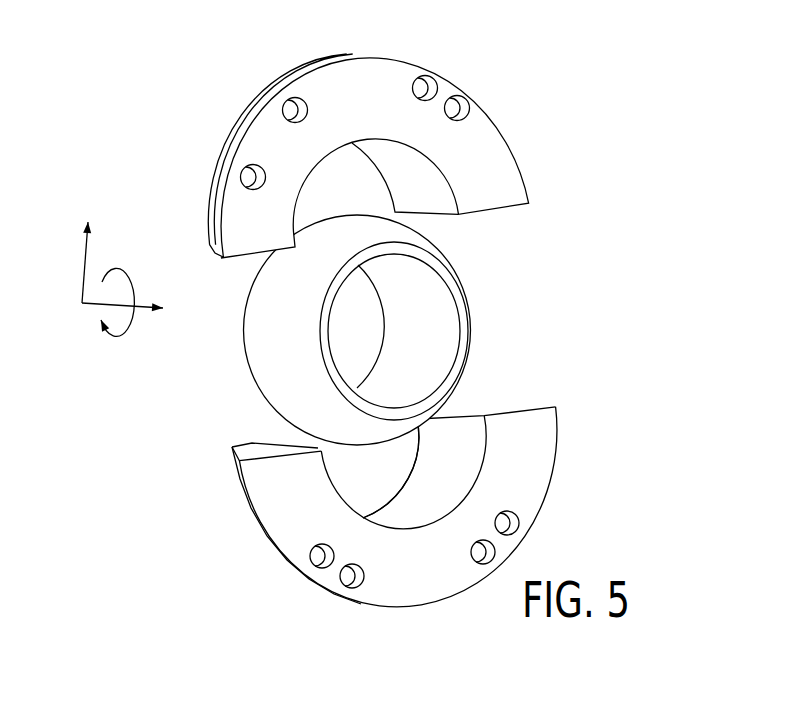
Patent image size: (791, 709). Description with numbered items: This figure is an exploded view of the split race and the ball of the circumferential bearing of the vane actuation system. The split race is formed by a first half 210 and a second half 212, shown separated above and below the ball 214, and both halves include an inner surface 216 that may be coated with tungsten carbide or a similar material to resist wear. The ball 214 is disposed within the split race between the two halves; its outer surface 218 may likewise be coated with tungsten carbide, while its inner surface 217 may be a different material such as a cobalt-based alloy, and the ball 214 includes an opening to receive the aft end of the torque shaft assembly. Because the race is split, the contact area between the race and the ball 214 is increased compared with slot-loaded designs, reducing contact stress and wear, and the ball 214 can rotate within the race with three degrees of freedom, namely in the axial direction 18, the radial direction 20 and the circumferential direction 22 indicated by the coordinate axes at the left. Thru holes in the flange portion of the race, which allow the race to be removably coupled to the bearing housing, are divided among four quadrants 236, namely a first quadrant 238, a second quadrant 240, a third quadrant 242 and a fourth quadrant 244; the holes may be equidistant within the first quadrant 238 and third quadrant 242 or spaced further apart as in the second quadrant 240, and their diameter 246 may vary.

The axial direction 18 is at (145, 300).
The radial direction 20 is at (82, 267).
The circumferential direction 22 is at (123, 338).
The first half 210 is at (512, 145).
The second half 212 is at (557, 430).
The ball 214 is at (453, 263).
The inner surface 216 is at (420, 510).
The inner surface 217 is at (432, 372).
The outer surface 218 is at (398, 330).
The quadrants 236 is at (430, 335).
The first quadrant 238 is at (379, 137).
The second quadrant 240 is at (265, 82).
The third quadrant 242 is at (270, 568).
The fourth quadrant 244 is at (446, 530).
The diameter 246 is at (251, 164).